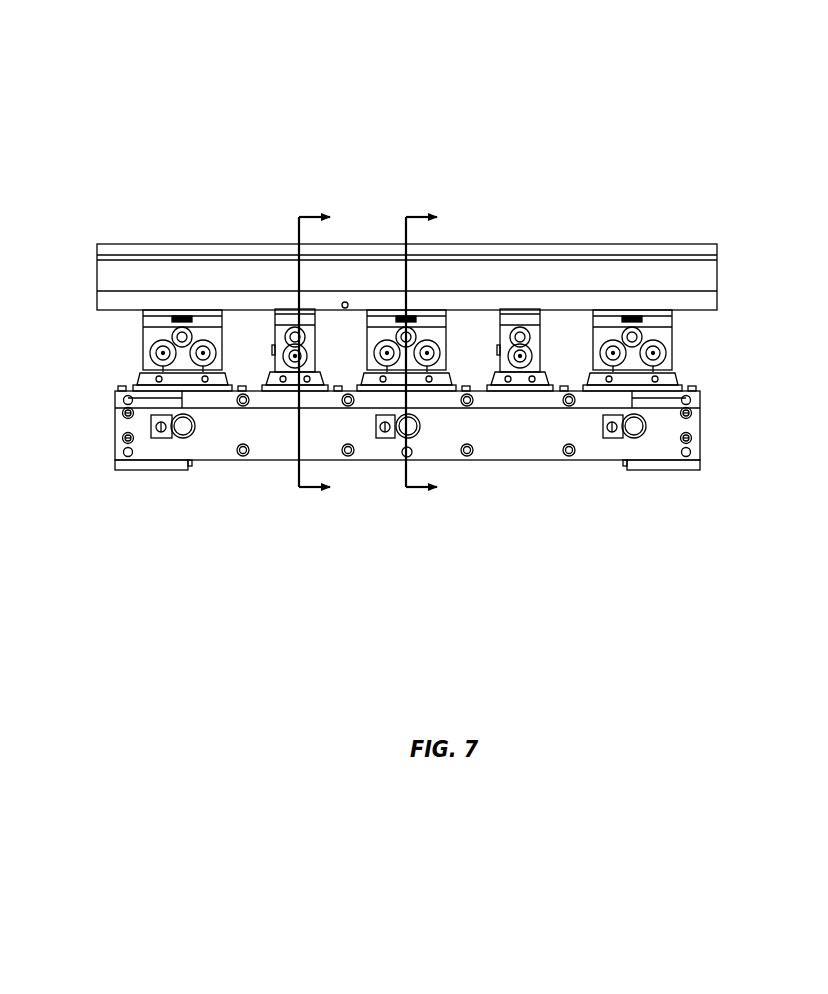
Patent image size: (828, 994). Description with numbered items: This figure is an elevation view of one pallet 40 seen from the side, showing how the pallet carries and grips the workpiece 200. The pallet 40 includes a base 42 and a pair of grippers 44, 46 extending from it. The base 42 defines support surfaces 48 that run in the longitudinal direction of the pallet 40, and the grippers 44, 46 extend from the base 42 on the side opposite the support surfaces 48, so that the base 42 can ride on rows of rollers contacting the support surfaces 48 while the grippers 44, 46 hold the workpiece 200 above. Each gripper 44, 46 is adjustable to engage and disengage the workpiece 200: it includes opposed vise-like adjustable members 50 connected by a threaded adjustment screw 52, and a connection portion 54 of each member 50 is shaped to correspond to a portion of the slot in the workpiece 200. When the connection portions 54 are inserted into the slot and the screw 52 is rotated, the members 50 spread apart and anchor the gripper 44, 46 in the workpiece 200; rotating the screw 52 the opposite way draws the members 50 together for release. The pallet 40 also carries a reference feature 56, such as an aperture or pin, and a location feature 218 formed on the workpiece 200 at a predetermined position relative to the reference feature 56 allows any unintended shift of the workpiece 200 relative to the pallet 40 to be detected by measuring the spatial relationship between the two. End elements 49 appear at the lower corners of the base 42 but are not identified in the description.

The pallet 40 is at (770, 323).
The base 42 is at (407, 535).
The gripper 44 is at (143, 327).
The gripper 46 is at (275, 333).
The support surfaces 48 is at (218, 465).
The end foot 49 is at (145, 470).
The adjustable members 50 is at (143, 362).
The adjustment screw 52 is at (181, 326).
The connection portion 54 is at (195, 327).
The reference feature 56 is at (397, 462).
The workpiece 200 is at (496, 243).
The location feature 218 is at (346, 301).